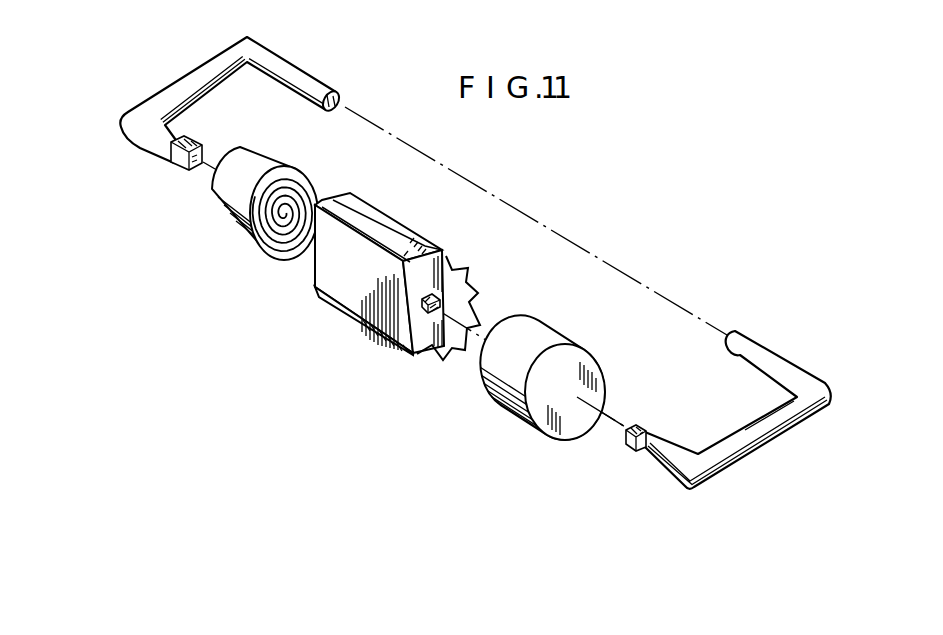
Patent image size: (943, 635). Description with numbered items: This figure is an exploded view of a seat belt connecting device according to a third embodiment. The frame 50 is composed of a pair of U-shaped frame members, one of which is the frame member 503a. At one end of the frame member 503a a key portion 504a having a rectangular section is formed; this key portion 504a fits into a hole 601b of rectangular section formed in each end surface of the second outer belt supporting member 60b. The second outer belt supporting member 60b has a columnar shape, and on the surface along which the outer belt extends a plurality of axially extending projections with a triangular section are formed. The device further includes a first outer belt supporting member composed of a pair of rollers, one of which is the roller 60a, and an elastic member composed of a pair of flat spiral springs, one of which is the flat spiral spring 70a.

The frame 50 is at (475, 244).
The U-shaped frame member 503a is at (313, 88).
The key portion 504a is at (185, 165).
The flat spiral spring 70a is at (246, 240).
The second outer belt supporting member 60b is at (340, 316).
The hole 601b is at (438, 305).
The roller 60a is at (484, 390).